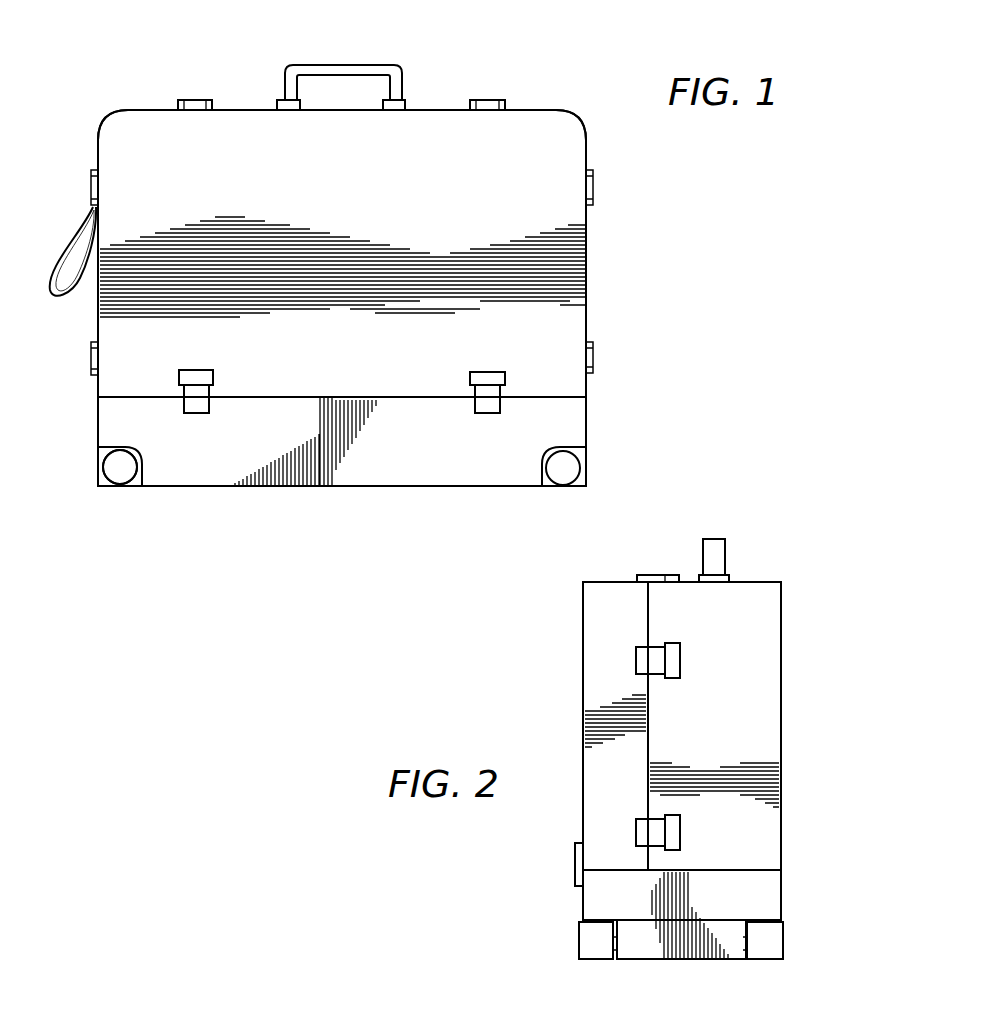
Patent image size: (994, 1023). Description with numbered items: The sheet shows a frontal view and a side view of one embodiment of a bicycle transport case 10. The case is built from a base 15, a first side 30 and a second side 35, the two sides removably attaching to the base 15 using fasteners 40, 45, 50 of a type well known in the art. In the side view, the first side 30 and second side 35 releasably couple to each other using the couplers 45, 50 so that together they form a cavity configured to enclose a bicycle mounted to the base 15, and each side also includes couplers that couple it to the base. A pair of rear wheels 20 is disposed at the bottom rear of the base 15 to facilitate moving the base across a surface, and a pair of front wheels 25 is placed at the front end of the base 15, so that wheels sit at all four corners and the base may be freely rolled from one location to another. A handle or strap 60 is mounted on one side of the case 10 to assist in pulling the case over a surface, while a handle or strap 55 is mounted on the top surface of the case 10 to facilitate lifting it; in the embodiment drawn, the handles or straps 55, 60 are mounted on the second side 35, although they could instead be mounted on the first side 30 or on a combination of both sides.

In FIG. 1, the bicycle transport case 10 is at (650, 238).
In FIG. 2, the bicycle transport case 10 is at (540, 603).
In FIG. 1, the base 15 is at (312, 487).
In FIG. 2, the base 15 is at (665, 940).
In FIG. 1, the rear wheels 20 is at (568, 468).
In FIG. 2, the rear wheels 20 is at (588, 940).
In FIG. 1, the front wheels 25 is at (118, 470).
In FIG. 1, the first side 30 is at (560, 311).
In FIG. 2, the first side 30 is at (583, 660).
In FIG. 2, the second side 35 is at (783, 630).
In FIG. 1, the fasteners 40 is at (192, 372).
In FIG. 2, the fasteners 40 is at (575, 862).
In FIG. 1, the fasteners (couplers) 45 is at (91, 185).
In FIG. 2, the fasteners (couplers) 45 is at (673, 660).
In FIG. 1, the fasteners (couplers) 50 is at (195, 100).
In FIG. 2, the fasteners (couplers) 50 is at (660, 576).
In FIG. 1, the handle or strap 55 is at (347, 63).
In FIG. 2, the handle or strap 55 is at (716, 547).
In FIG. 1, the handle or strap 60 is at (54, 296).